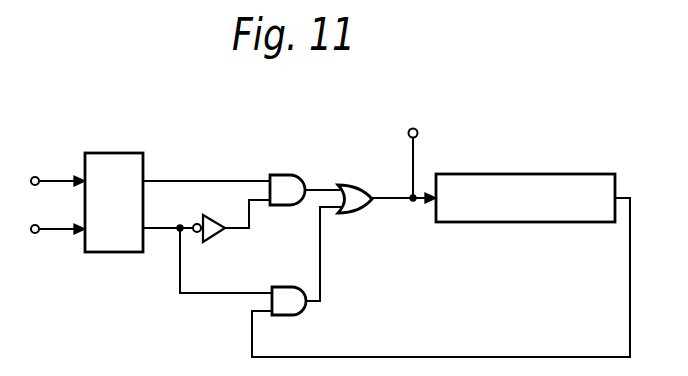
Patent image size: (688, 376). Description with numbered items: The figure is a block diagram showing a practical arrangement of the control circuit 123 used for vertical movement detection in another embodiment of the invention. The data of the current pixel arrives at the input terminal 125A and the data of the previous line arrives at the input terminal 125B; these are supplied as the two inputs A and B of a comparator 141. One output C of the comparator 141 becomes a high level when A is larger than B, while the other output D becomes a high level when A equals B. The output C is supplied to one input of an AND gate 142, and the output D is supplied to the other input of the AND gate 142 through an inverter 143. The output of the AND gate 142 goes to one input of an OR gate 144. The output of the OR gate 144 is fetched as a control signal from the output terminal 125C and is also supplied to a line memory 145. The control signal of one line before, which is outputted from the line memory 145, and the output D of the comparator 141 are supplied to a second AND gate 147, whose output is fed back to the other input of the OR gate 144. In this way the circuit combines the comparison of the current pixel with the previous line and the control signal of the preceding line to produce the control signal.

The control circuit 123 is at (278, 142).
The input terminal 125A is at (35, 177).
The input terminal 125B is at (35, 233).
The output terminal 125C is at (416, 130).
The comparator 141 is at (107, 252).
The AND gate 142 is at (293, 205).
The inverter 143 is at (212, 242).
The OR gate 144 is at (352, 213).
The line memory 145 is at (518, 222).
The AND gate 147 is at (292, 315).